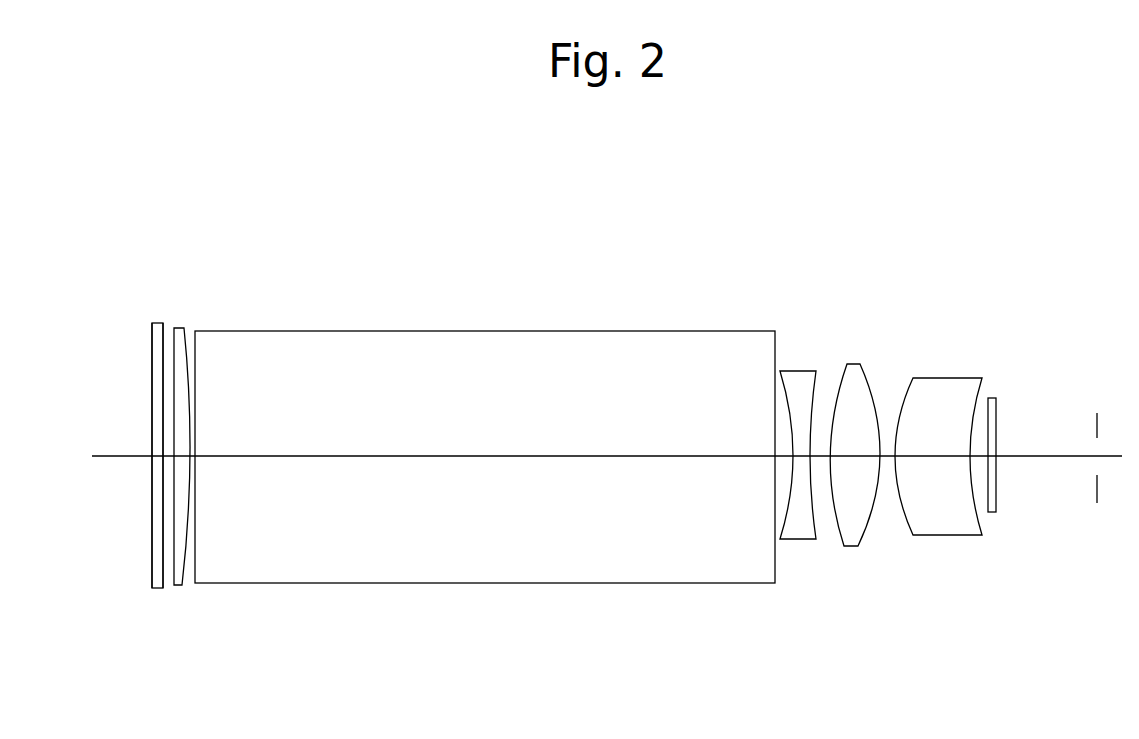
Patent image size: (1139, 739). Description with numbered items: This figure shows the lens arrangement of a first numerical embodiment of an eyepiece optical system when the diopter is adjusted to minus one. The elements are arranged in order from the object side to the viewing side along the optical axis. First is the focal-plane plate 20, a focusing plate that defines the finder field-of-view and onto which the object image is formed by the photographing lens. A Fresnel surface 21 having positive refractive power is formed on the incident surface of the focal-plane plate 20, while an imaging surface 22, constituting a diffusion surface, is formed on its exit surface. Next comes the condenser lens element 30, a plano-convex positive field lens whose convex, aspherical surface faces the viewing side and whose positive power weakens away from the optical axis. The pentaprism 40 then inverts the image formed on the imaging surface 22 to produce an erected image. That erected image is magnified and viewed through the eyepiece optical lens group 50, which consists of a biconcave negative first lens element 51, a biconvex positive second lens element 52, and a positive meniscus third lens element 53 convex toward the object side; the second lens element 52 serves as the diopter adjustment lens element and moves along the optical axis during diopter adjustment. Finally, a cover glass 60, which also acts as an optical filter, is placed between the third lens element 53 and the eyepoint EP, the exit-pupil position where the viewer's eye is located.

The focal-plane plate 20 is at (160, 583).
The Fresnel surface 21 is at (153, 583).
The imaging surface 22 is at (163, 583).
The condenser lens element 30 is at (180, 331).
The pentaprism 40 is at (488, 562).
The eyepiece optical lens group 50 is at (978, 352).
The first lens element 51 is at (797, 537).
The second lens element 52 is at (851, 537).
The third lens element 53 is at (942, 522).
The cover glass 60 is at (992, 516).
The eyepoint EP is at (1098, 424).